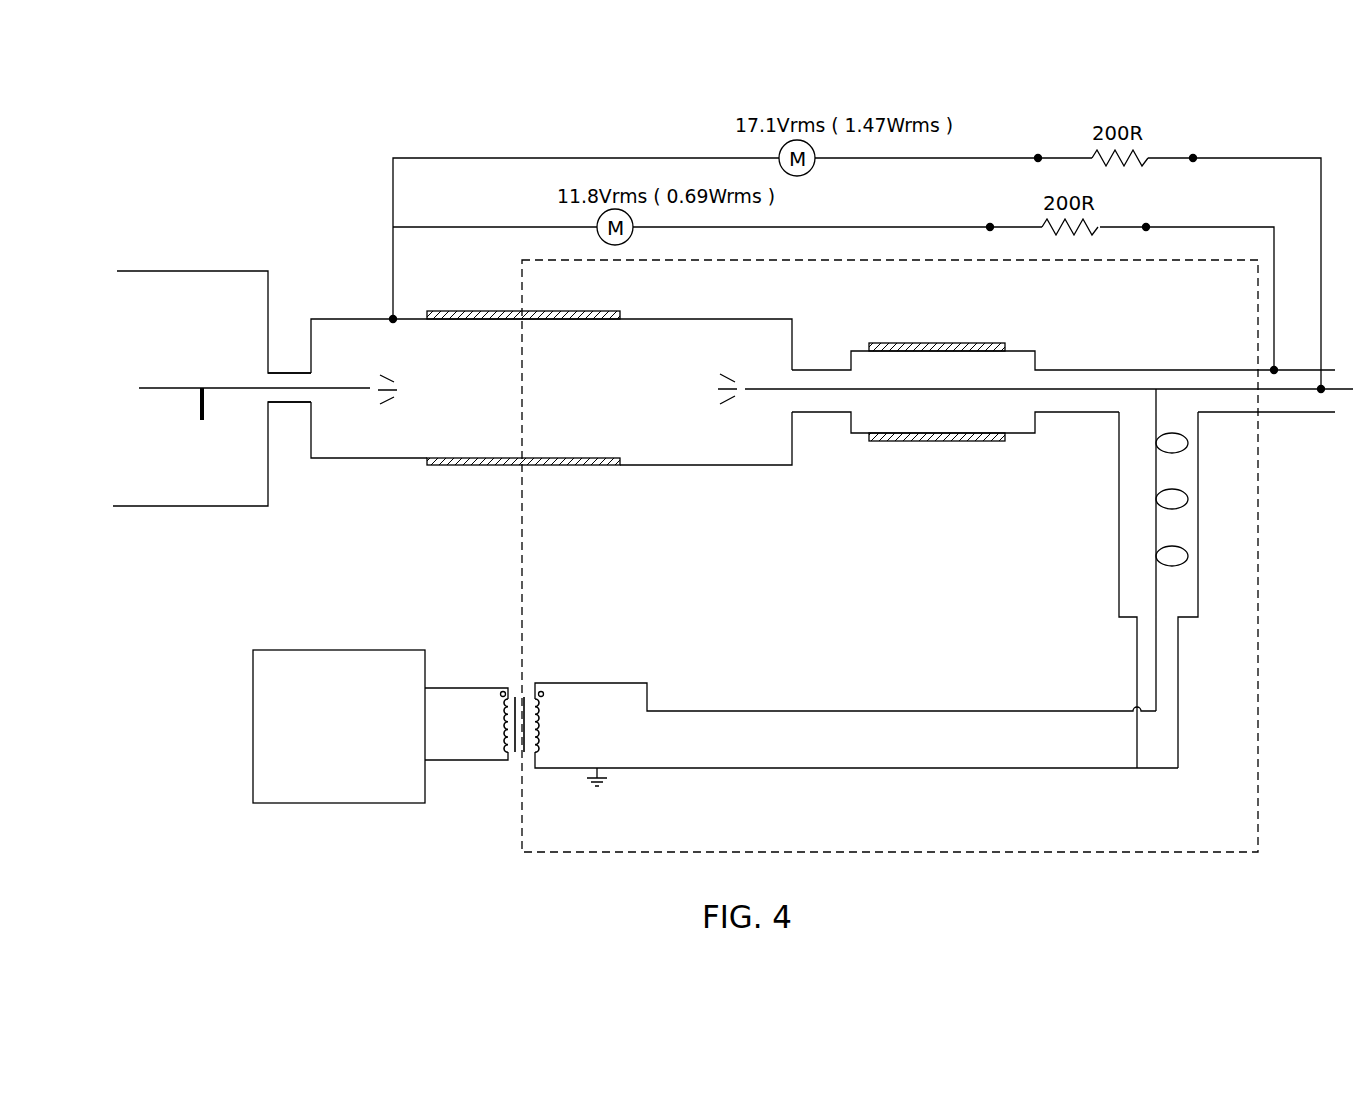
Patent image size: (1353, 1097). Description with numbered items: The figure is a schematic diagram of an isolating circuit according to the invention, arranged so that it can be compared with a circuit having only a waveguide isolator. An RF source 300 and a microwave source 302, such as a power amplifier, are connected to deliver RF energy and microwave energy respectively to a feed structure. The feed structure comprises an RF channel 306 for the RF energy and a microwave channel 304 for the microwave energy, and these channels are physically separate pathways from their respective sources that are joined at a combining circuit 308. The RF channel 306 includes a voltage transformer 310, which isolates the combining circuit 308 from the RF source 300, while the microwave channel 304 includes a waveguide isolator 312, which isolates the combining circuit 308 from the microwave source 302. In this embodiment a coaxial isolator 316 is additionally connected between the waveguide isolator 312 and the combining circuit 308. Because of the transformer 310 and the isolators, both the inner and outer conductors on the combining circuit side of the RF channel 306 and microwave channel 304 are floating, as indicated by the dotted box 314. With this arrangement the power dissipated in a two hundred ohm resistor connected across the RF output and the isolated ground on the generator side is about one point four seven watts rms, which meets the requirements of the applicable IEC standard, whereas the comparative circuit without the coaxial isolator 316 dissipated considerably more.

The RF source 300 is at (252, 720).
The microwave source 302 is at (185, 508).
The microwave channel 304 is at (290, 372).
The RF channel 306 is at (457, 763).
The combining circuit 308 is at (1197, 578).
The voltage transformer 310 is at (542, 717).
The waveguide isolator 312 is at (670, 468).
The dotted box 314 is at (1259, 732).
The coaxial isolator 316 is at (923, 441).